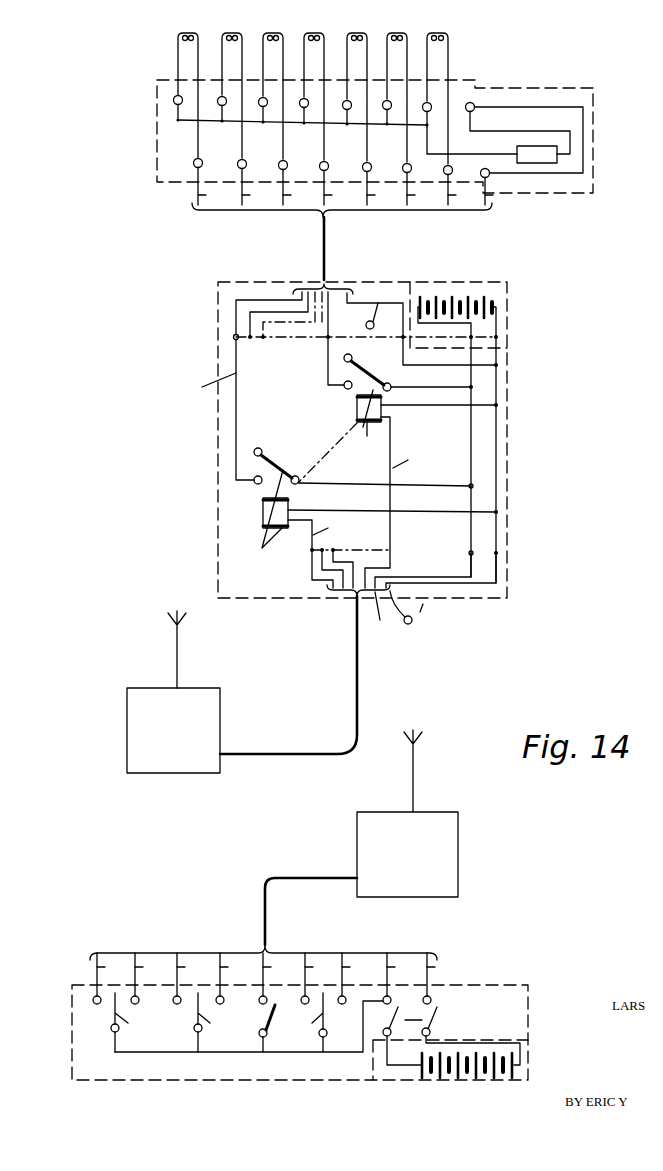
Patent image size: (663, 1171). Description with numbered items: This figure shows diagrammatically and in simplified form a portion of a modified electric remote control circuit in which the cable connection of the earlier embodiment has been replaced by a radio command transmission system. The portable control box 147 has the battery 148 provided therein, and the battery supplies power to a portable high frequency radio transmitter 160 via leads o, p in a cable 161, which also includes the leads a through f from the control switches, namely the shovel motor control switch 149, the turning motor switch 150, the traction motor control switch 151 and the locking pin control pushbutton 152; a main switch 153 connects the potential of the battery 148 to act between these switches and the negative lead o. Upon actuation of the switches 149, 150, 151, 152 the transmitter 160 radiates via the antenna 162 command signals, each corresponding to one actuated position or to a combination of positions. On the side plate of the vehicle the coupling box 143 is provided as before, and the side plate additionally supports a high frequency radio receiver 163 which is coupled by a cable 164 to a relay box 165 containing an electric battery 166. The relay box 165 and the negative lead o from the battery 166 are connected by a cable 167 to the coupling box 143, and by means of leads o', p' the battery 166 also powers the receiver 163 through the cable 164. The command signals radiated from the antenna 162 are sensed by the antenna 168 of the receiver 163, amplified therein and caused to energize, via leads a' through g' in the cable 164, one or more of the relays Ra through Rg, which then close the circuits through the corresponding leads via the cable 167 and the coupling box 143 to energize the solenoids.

The coupling box 143 is at (177, 145).
The portable control box 147 is at (279, 1031).
The battery 148 is at (472, 1068).
The shovel motor control three positions switch 149 is at (144, 1022).
The turning motor three position switch 150 is at (226, 1022).
The traction motor control three positions switch 151 is at (305, 1022).
The locking pin control pushbutton 152 is at (275, 1005).
The main switch 153 is at (412, 1020).
The portable high frequency radio transmitter 160 is at (447, 875).
The cable 161 is at (263, 902).
The antenna 162 is at (418, 783).
The high frequency radio receiver 163 is at (148, 775).
The cable 164 is at (358, 695).
The relay box 165 is at (381, 443).
The electric battery 166 is at (470, 297).
The cable 167 is at (327, 250).
The antenna 168 is at (184, 660).